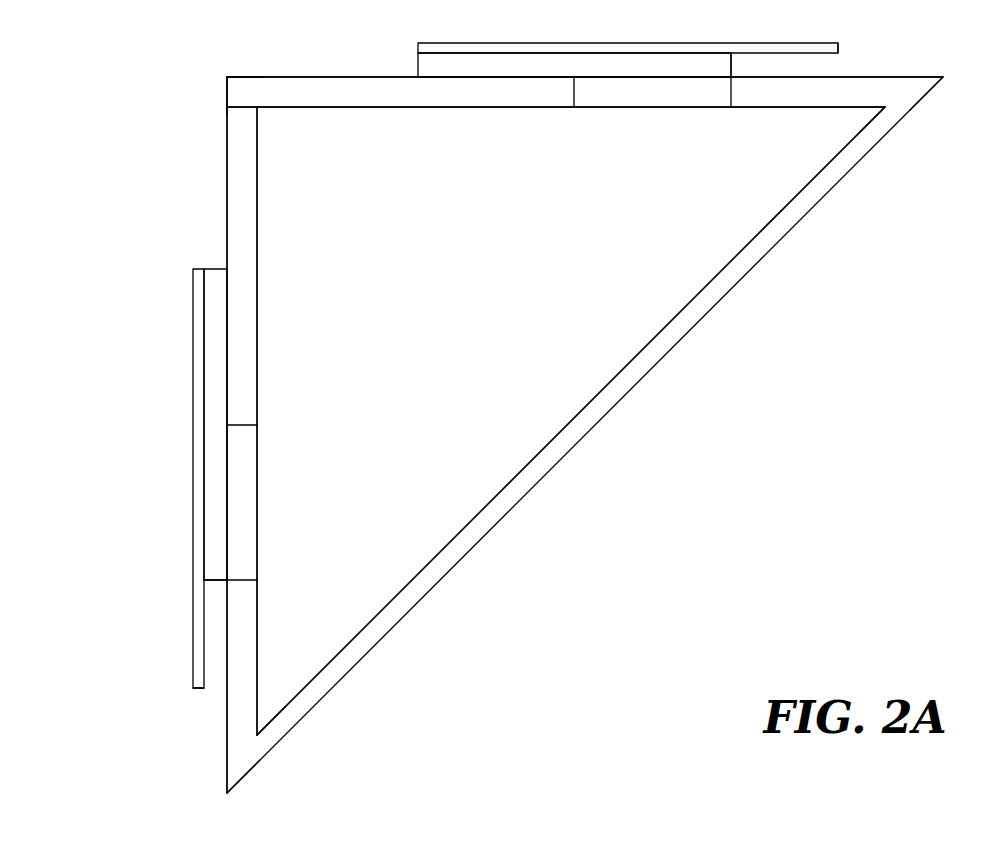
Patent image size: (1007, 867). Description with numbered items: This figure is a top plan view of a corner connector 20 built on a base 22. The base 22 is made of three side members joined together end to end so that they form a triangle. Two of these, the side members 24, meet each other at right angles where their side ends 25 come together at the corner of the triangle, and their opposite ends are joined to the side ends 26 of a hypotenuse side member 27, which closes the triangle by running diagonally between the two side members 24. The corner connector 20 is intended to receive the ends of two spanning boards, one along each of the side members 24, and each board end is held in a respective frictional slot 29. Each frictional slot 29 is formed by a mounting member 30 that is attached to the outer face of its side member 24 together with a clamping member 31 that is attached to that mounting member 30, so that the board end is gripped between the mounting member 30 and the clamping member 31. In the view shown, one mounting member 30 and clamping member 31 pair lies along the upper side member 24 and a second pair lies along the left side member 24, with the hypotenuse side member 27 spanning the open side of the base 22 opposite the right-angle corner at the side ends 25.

The corner connector 20 is at (474, 287).
The base 22 is at (297, 92).
The side member 24 is at (403, 93).
The side end 25 is at (227, 118).
The side end 26 is at (918, 79).
The hypotenuse side member 27 is at (592, 413).
The frictional slot 29 is at (820, 66).
The mounting member 30 is at (428, 66).
The clamping member 31 is at (500, 46).